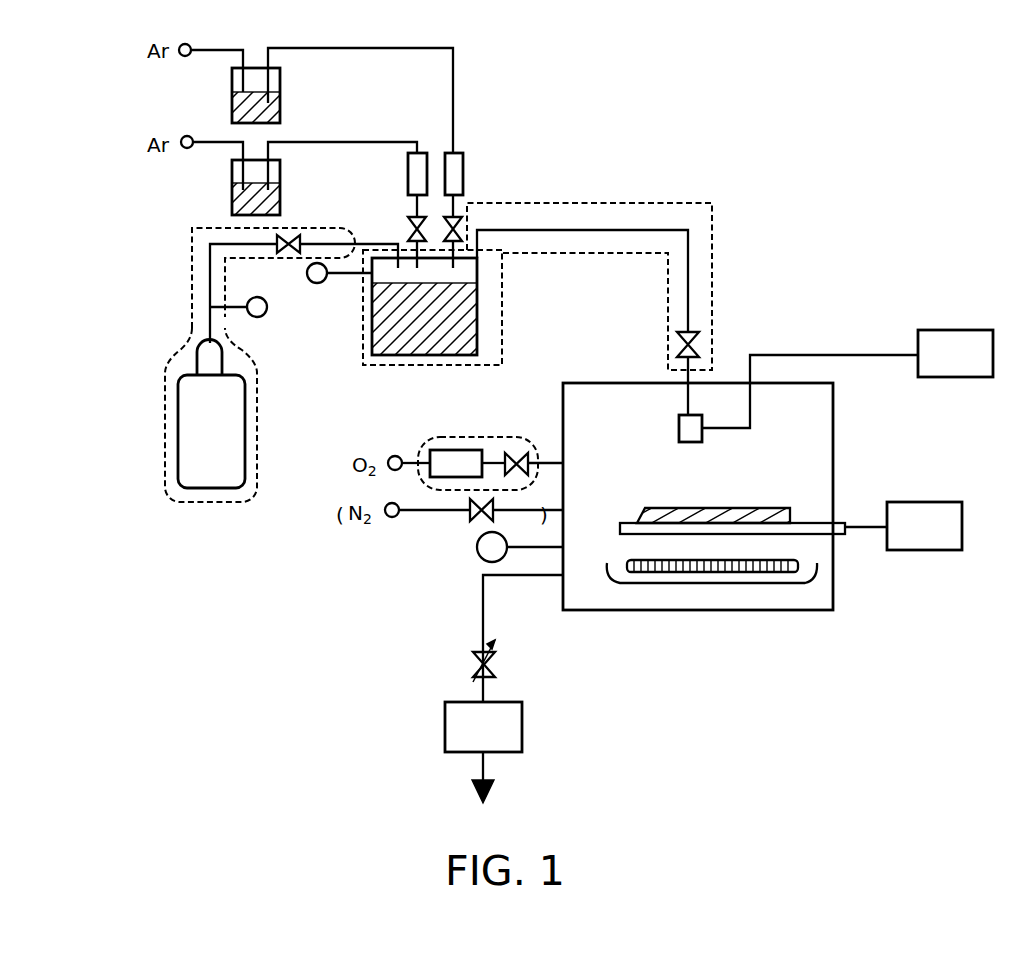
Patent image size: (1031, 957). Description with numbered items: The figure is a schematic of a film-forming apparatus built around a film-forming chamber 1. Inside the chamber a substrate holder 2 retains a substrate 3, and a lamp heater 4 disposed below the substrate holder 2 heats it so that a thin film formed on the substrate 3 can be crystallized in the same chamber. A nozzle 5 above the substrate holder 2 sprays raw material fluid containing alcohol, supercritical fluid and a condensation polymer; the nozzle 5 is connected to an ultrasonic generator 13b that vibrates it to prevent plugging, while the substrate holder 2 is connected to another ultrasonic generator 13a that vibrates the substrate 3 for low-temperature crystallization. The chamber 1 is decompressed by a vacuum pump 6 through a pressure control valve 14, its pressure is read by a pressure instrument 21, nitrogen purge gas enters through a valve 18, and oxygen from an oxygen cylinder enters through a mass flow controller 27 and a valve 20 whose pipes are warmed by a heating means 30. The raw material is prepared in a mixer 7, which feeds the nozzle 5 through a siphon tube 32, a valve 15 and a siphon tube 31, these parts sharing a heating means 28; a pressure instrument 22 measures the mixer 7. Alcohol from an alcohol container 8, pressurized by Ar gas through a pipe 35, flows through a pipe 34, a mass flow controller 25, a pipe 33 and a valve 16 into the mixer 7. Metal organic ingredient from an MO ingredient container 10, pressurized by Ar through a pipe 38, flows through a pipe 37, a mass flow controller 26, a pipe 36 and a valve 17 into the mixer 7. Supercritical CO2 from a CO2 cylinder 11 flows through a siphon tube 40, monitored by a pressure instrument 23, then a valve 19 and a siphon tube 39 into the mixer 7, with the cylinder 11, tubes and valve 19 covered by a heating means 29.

The film-forming chamber 1 is at (833, 601).
The substrate holder 2 is at (822, 535).
The substrate 3 is at (787, 508).
The lamp heater 4 is at (733, 578).
The nozzle 5 is at (678, 428).
The vacuum pump 6 is at (522, 727).
The mixer 7 is at (480, 305).
The alcohol container 8 is at (278, 100).
The MO ingredient container 10 is at (232, 195).
The CO2 cylinder 11 is at (178, 445).
The ultrasonic generator 13a is at (925, 502).
The ultrasonic generator 13b is at (955, 330).
The pressure control valve 14 is at (498, 666).
The valve 15 is at (700, 343).
The valve 16 is at (460, 225).
The valve 17 is at (408, 230).
The valve 18 is at (470, 517).
The valve 19 is at (289, 236).
The valve 20 is at (520, 452).
The pressure instrument 21 is at (480, 555).
The pressure instrument 22 is at (307, 274).
The pressure instrument 23 is at (262, 317).
The mass flow controller 25 is at (462, 150).
The mass flow controller 26 is at (423, 152).
The mass flow controller 27 is at (427, 445).
The heating means 28 is at (713, 222).
The heating means 29 is at (212, 502).
The heating means 30 is at (473, 437).
The siphon tube 31 is at (678, 414).
The siphon tube 32 is at (690, 255).
The pipe 33 is at (455, 200).
The pipe 34 is at (455, 57).
The pipe 35 is at (211, 54).
The pipe 36 is at (408, 200).
The pipe 37 is at (395, 140).
The pipe 38 is at (218, 140).
The siphon tube 39 is at (330, 242).
The siphon tube 40 is at (208, 268).